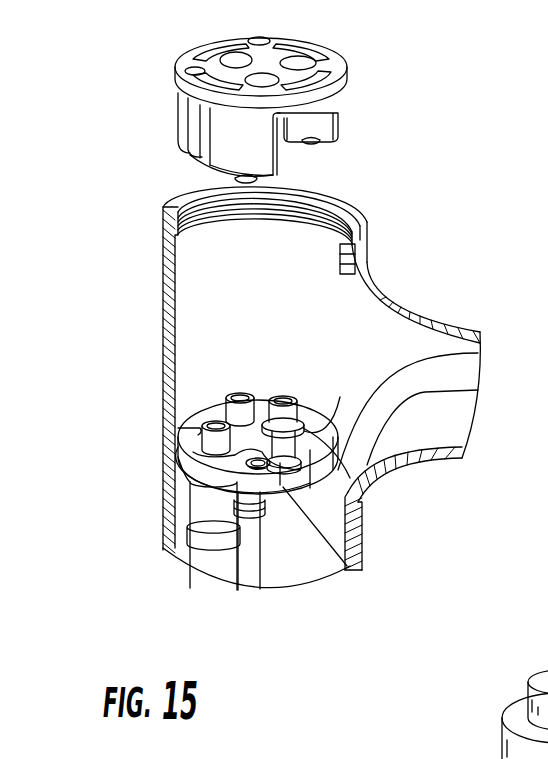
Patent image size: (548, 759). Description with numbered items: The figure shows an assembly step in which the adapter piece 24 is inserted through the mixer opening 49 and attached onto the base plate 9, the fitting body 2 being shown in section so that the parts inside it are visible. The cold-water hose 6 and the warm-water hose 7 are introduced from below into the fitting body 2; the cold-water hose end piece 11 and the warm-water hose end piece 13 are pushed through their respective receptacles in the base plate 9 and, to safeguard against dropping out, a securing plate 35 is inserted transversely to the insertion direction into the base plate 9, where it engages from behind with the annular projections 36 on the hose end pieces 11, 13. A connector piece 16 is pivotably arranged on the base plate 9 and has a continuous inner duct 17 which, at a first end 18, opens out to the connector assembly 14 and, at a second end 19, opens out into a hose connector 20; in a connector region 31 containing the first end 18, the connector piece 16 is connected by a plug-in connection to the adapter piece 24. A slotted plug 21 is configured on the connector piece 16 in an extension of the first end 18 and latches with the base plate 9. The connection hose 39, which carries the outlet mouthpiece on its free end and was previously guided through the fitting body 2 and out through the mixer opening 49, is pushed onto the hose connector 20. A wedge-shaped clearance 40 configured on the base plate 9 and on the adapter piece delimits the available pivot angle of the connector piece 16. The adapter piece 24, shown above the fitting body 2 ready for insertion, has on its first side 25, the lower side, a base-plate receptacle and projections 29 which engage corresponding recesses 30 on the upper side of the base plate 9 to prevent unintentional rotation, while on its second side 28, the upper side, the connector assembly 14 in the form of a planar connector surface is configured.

The fitting body 2 is at (162, 322).
The cold-water hose 6 is at (200, 563).
The warm-water hose 7 is at (258, 570).
The base plate 9 is at (185, 475).
The cold-water hose end piece 11 is at (186, 437).
The warm-water hose end piece 13 is at (244, 397).
The connector assembly 14 is at (342, 40).
The connector piece 16 is at (358, 502).
The inner duct 17 is at (291, 397).
The first end 18 is at (339, 395).
The second end 19 is at (433, 332).
The hose connector 20 is at (304, 471).
The plug 21 is at (350, 566).
The adapter piece 24 is at (178, 119).
The first side 25 is at (212, 170).
The second side 28 is at (186, 61).
The projection 29 is at (320, 145).
The recess 30 is at (214, 424).
The connector region 31 is at (316, 394).
The securing plate 35 is at (196, 433).
The projection 36 is at (238, 410).
The connection hose 39 is at (385, 400).
The clearance 40 is at (364, 540).
The mixer opening 49 is at (338, 213).